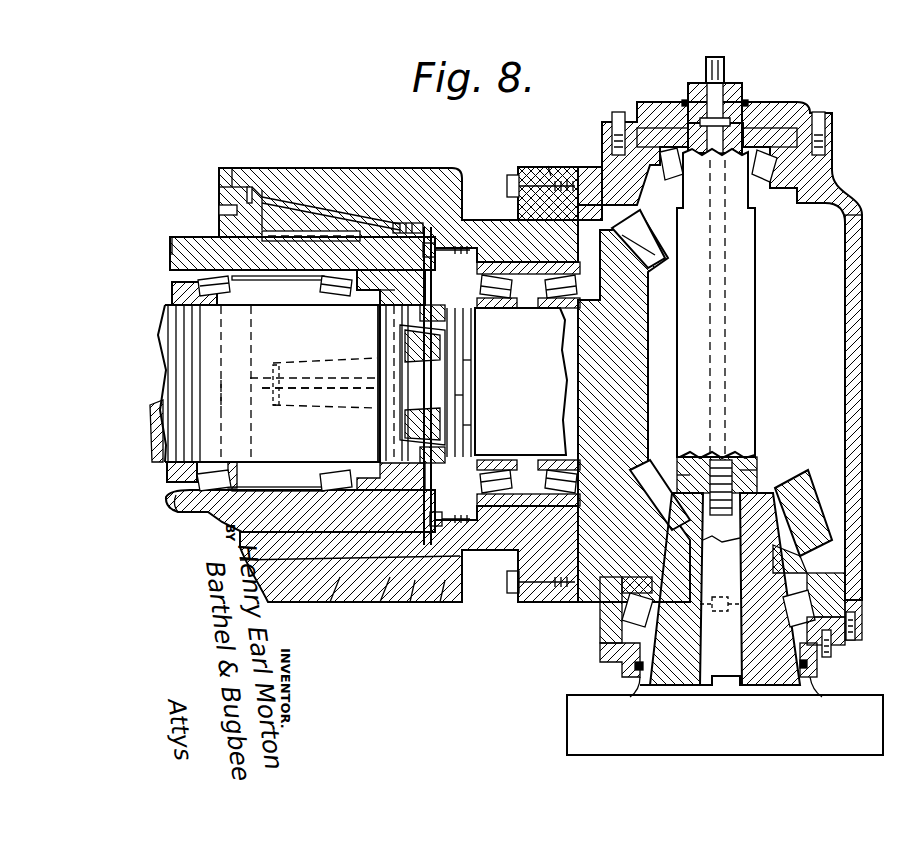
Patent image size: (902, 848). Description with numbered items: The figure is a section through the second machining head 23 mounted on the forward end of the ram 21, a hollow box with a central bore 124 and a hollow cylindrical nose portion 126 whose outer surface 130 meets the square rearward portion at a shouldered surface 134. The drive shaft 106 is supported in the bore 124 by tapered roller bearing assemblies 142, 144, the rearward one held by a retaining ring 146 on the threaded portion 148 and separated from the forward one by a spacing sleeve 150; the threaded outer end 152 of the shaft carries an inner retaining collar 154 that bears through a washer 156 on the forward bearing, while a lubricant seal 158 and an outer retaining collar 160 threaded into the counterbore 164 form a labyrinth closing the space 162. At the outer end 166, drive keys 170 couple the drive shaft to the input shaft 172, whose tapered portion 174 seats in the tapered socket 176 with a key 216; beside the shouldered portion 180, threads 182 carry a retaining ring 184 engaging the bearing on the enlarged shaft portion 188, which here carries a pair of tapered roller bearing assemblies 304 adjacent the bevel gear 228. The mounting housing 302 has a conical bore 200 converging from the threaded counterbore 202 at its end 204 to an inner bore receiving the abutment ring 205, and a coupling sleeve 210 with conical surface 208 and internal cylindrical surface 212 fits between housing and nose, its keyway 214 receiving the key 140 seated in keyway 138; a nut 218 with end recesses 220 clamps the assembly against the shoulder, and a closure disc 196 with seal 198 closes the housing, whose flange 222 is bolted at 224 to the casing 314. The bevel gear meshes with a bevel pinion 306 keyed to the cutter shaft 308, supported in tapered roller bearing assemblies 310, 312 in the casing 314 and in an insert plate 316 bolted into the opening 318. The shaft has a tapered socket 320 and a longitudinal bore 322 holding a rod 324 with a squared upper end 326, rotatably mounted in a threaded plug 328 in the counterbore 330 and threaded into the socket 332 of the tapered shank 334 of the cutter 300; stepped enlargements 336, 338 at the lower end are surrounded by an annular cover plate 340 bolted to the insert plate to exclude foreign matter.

The ram 21 is at (183, 236).
The second machining head 23 is at (570, 166).
The drive shaft 106 is at (165, 320).
The bore 124 is at (172, 278).
The nose portion 126 is at (287, 290).
The cylindrical outer surface 130 is at (275, 575).
The shouldered surface 134 is at (220, 392).
The keyway 138 is at (282, 205).
The key 140 is at (300, 230).
The tapered roller bearing assembly 142 is at (208, 298).
The tapered roller bearing assembly 144 is at (325, 285).
The retaining ring 146 is at (170, 490).
The threaded portion 148 is at (178, 345).
The spacing sleeve 150 is at (245, 280).
The threaded outer end 152 is at (380, 335).
The inner retaining collar 154 is at (372, 300).
The washer 156 is at (366, 305).
The lubricant seal 158 is at (448, 602).
The outer retaining collar 160 is at (380, 602).
The space 162 is at (311, 477).
The threaded counterbore 164 is at (414, 602).
The outer end 166 is at (462, 410).
The drive keys 170 is at (442, 385).
The input shaft 172 is at (640, 382).
The tapered reduced diameter portion 174 is at (472, 390).
The tapered socket 176 is at (332, 408).
The shouldered portion 180 is at (470, 340).
The threaded portion 182 is at (470, 422).
The retaining ring 184 is at (478, 480).
The shaft portion 188 is at (480, 400).
The closure disc 196 is at (430, 228).
The seal 198 is at (470, 330).
The conical bore 200 is at (318, 205).
The threaded counterbore 202 is at (249, 186).
The end 204 is at (232, 168).
The abutment ring 205 is at (405, 224).
The external conical surface 208 is at (285, 560).
The coupling sleeve 210 is at (350, 549).
The internal cylindrical surface 212 is at (348, 600).
The keyway 214 is at (258, 190).
The key 216 is at (308, 392).
The nut 218 is at (225, 200).
The end recesses 220 is at (236, 212).
The flange 222 is at (548, 166).
The bolts 224 is at (508, 184).
The bevel gear 228 is at (652, 270).
The cutter 300 is at (567, 732).
The mounting housing 302 is at (392, 170).
The tapered roller bearing assemblies 304 is at (535, 315).
The bevel pinion 306 is at (800, 510).
The cutter shaft 308 is at (745, 360).
The tapered roller bearing assembly 310 is at (800, 165).
The tapered roller bearing assembly 312 is at (840, 590).
The casing 314 is at (860, 230).
The insert plate 316 is at (850, 612).
The opening 318 is at (858, 634).
The tapered socket 320 is at (750, 490).
The longitudinal bore 322 is at (745, 455).
The rod 324 is at (722, 94).
The squared upper end 326 is at (724, 62).
The threaded plug 328 is at (694, 84).
The threaded counterbore 330 is at (745, 102).
The threaded socket 332 is at (688, 485).
The tapered shank 334 is at (725, 589).
The stepped enlargement 336 is at (655, 580).
The stepped enlargement 338 is at (640, 668).
The cover plate 340 is at (818, 665).